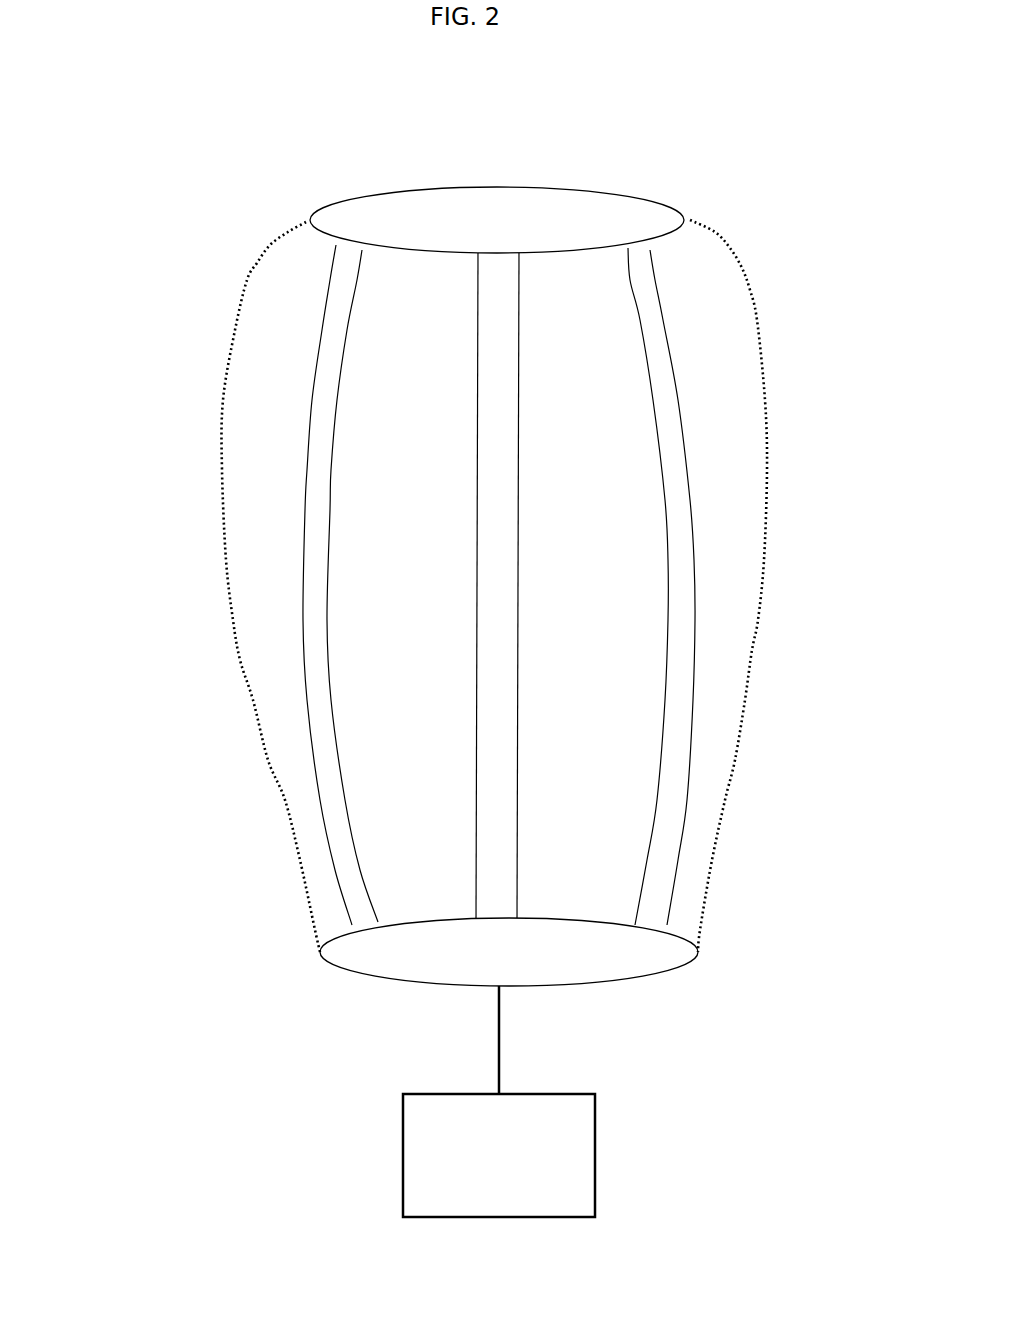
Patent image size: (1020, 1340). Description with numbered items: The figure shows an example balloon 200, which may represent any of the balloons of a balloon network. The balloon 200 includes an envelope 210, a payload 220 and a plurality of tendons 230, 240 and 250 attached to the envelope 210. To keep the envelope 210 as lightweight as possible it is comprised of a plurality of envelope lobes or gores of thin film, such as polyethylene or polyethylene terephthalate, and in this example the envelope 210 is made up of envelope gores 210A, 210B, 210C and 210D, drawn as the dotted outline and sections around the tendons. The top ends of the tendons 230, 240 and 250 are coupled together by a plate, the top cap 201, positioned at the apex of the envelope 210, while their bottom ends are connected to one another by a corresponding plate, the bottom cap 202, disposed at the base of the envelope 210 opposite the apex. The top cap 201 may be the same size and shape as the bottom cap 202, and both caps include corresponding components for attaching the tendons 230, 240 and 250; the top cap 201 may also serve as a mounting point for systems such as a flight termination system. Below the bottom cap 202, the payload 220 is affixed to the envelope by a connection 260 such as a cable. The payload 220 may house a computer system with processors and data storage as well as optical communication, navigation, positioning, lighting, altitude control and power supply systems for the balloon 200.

The balloon 200 is at (872, 29).
The top cap 201 is at (660, 198).
The bottom cap 202 is at (443, 973).
The envelope 210 is at (767, 397).
The envelope gore 210A is at (256, 640).
The envelope gore 210B is at (386, 725).
The envelope gore 210C is at (631, 746).
The envelope gore 210D is at (741, 582).
The payload 220 is at (403, 1148).
The tendon 230 is at (348, 240).
The tendon 240 is at (497, 253).
The tendon 250 is at (632, 243).
The connection 260 is at (499, 1053).